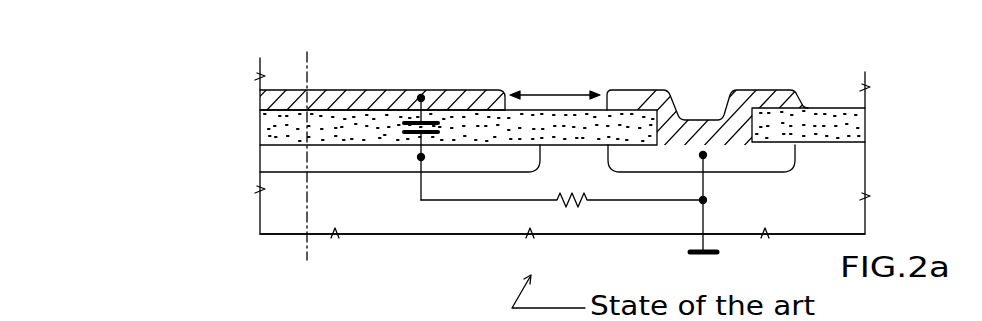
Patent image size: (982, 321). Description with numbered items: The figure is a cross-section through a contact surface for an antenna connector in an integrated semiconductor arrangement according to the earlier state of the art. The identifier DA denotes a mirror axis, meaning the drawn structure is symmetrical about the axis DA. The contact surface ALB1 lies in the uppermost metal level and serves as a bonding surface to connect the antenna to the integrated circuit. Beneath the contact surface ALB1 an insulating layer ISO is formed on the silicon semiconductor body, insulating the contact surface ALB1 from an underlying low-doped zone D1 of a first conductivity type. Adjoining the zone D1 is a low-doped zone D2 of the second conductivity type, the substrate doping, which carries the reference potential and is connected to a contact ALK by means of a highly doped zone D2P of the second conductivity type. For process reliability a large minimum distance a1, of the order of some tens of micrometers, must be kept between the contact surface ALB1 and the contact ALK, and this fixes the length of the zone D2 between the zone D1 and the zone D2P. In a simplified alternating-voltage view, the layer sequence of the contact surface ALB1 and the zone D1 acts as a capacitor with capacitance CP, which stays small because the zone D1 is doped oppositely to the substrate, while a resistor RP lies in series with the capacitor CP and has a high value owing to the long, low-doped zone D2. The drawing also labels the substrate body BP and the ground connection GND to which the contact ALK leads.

The mirror axis DA is at (310, 68).
The contact surface ALB1 is at (476, 92).
The minimum distance a1 is at (555, 93).
The contact ALK is at (751, 90).
The insulating layer ISO is at (828, 117).
The low-doped zone of a first conductivity type D1 is at (278, 161).
The highly doped zone of the second conductivity type D2P is at (771, 155).
The low doped zone of the second conductivity type D2 is at (579, 155).
The substrate body BP is at (247, 212).
The capacitor capacitance value CP is at (400, 131).
The resistor RP is at (570, 212).
The ground connection GND is at (718, 250).